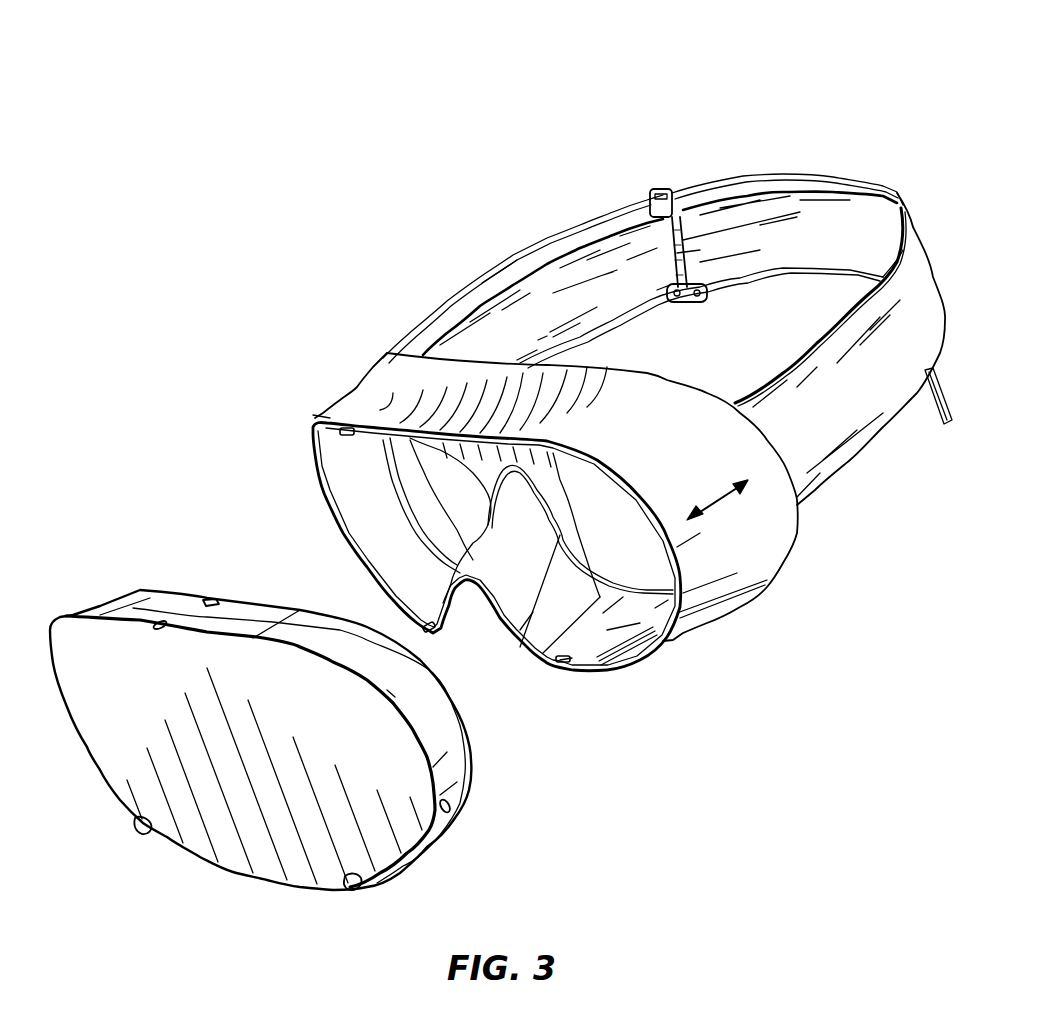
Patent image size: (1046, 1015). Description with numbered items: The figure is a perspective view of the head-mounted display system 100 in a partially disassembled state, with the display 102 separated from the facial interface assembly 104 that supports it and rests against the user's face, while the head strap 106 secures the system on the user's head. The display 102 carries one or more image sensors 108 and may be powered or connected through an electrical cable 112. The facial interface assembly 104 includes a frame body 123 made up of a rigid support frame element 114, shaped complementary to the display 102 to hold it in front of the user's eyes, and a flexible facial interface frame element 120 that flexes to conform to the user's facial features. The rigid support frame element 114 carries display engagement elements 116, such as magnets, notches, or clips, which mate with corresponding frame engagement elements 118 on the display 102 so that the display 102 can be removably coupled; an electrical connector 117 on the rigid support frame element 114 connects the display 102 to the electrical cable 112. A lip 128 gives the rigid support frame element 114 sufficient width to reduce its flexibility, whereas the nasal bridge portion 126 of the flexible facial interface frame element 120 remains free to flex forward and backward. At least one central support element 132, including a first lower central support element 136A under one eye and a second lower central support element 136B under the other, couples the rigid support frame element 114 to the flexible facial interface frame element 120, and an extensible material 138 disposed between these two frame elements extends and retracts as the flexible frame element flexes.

The head-mounted display system 100 is at (300, 84).
The display 102 is at (112, 556).
The facial interface assembly 104 is at (322, 314).
The head strap 106 is at (830, 440).
The image sensors 108 is at (140, 832).
The electrical cable 112 is at (490, 277).
The rigid support frame element 114 is at (323, 460).
The display engagement elements 116 is at (567, 663).
The electrical connector 117 is at (313, 423).
The frame engagement elements 118 is at (205, 597).
The flexible facial interface frame element 120 is at (660, 612).
The frame body 123 is at (308, 406).
The nasal bridge portion 126 is at (527, 633).
The lip 128 is at (327, 507).
The central support element 132 is at (467, 675).
The first lower central support element 136A is at (377, 587).
The second lower central support element 136B is at (587, 647).
The extensible material 138 is at (783, 508).